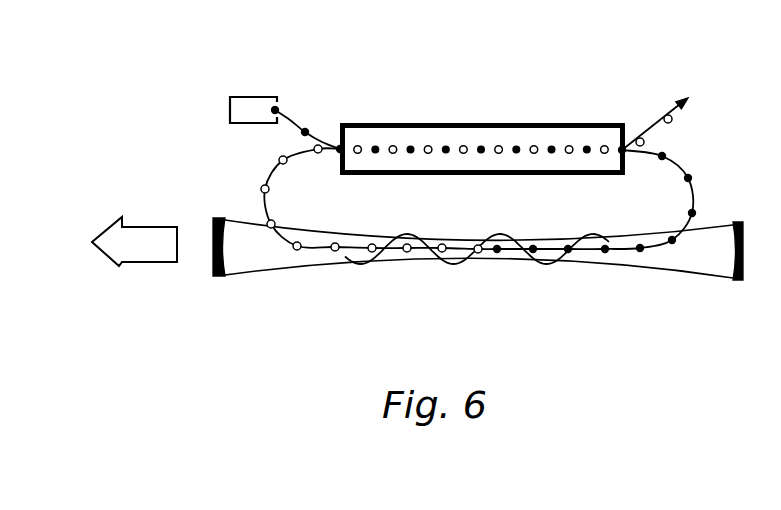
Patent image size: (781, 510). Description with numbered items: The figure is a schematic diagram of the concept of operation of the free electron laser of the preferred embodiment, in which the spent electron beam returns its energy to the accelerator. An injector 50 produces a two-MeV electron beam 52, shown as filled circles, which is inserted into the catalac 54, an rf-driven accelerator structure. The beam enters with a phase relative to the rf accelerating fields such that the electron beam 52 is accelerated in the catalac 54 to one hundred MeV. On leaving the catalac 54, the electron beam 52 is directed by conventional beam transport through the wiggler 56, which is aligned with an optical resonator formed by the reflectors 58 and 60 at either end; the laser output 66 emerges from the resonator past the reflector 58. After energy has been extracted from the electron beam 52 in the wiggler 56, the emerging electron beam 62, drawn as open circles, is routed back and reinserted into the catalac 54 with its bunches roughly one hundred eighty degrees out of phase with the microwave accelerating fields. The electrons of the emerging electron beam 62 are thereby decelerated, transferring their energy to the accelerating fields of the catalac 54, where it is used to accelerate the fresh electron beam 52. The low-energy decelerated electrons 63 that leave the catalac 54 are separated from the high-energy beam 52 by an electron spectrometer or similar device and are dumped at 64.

The injector 50 is at (232, 97).
The electron beam 52 is at (288, 117).
The catalac 54 is at (447, 123).
The wiggler 56 is at (447, 266).
The reflector 58 is at (221, 278).
The reflector 60 is at (735, 282).
The emerging electron beam 62 is at (274, 172).
The decelerated electrons 63 is at (660, 131).
The dump 64 is at (693, 101).
The laser output 66 is at (120, 268).